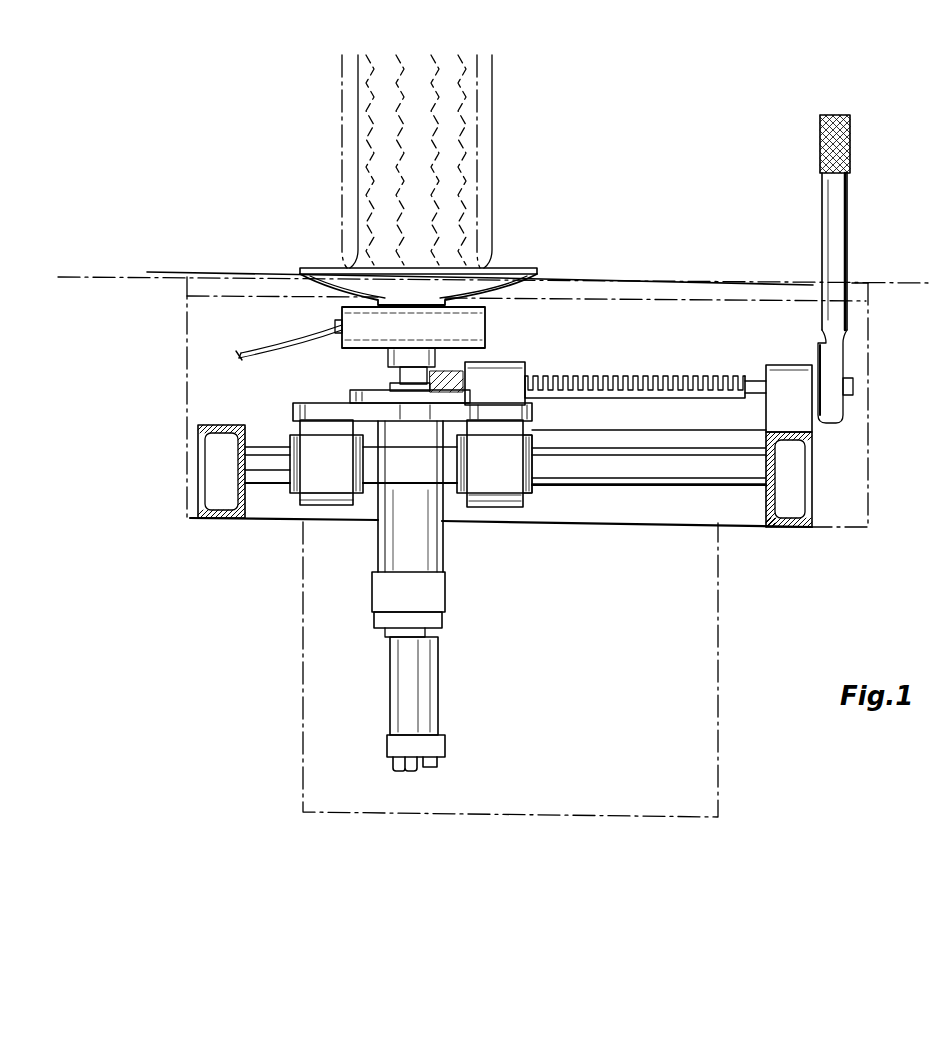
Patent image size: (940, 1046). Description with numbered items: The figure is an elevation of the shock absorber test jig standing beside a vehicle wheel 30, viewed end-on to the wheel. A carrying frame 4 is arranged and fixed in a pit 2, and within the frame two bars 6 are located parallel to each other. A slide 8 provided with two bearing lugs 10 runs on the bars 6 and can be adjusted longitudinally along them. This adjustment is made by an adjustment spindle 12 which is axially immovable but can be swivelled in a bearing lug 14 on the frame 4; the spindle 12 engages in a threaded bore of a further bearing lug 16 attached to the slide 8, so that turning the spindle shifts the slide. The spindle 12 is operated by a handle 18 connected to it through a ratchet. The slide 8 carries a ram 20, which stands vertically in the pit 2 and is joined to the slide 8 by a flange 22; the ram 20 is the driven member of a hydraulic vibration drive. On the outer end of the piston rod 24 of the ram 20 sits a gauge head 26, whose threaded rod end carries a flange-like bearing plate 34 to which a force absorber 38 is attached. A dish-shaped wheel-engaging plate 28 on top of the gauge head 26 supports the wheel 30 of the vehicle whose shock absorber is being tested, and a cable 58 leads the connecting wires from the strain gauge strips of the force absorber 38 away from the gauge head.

The pit 2 is at (868, 405).
The carrying frame 4 is at (218, 485).
The bars 6 is at (613, 475).
The slide 8 is at (493, 412).
The bearing lugs 10 is at (322, 482).
The adjustment spindle 12 is at (673, 375).
The bearing lug 14 is at (786, 382).
The bearing lug 16 is at (510, 378).
The hand crank lever 18 is at (832, 205).
The ram 20 is at (398, 547).
The flange 22 is at (467, 393).
The piston rod 24 is at (398, 375).
The gauge head 26 is at (490, 318).
The dish-shaped wheel-engaging plate 28 is at (489, 272).
The wheel 30 is at (480, 203).
The bearing plate 34 is at (342, 345).
The force absorber 38 is at (332, 325).
The cable 58 is at (238, 352).